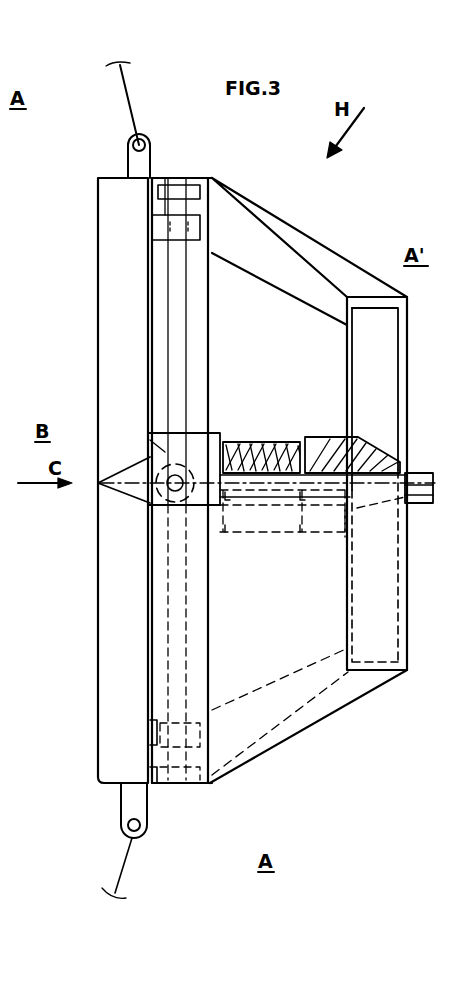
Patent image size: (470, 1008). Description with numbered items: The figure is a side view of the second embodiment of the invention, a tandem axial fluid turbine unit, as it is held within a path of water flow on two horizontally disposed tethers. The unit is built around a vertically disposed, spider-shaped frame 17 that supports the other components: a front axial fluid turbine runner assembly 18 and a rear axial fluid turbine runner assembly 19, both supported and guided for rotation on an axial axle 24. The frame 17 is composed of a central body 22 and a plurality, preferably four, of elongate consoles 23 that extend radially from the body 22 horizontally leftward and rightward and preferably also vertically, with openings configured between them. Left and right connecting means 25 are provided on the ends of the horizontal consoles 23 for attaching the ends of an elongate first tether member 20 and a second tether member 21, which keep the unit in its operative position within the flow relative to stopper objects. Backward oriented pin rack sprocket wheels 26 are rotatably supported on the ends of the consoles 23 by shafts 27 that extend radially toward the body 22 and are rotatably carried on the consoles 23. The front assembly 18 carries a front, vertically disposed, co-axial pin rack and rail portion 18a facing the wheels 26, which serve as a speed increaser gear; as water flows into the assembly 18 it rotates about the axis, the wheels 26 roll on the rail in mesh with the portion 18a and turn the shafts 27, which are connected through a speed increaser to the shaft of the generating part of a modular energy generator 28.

The spider-shaped frame 17 is at (60, 228).
The front axial fluid turbine runner assembly 18 is at (214, 177).
The pin rack and rail portion 18a is at (165, 180).
The rear axial fluid turbine runner assembly 19 is at (462, 300).
The first tether member 20 is at (120, 85).
The second tether member 21 is at (117, 880).
The central body 22 is at (150, 440).
The consoles 23 is at (118, 292).
The axial axle 24 is at (398, 486).
The connecting means 25 is at (128, 146).
The pin rack sprocket wheels 26 is at (182, 190).
The shafts 27 is at (168, 340).
The modular energy generator 28 is at (270, 412).